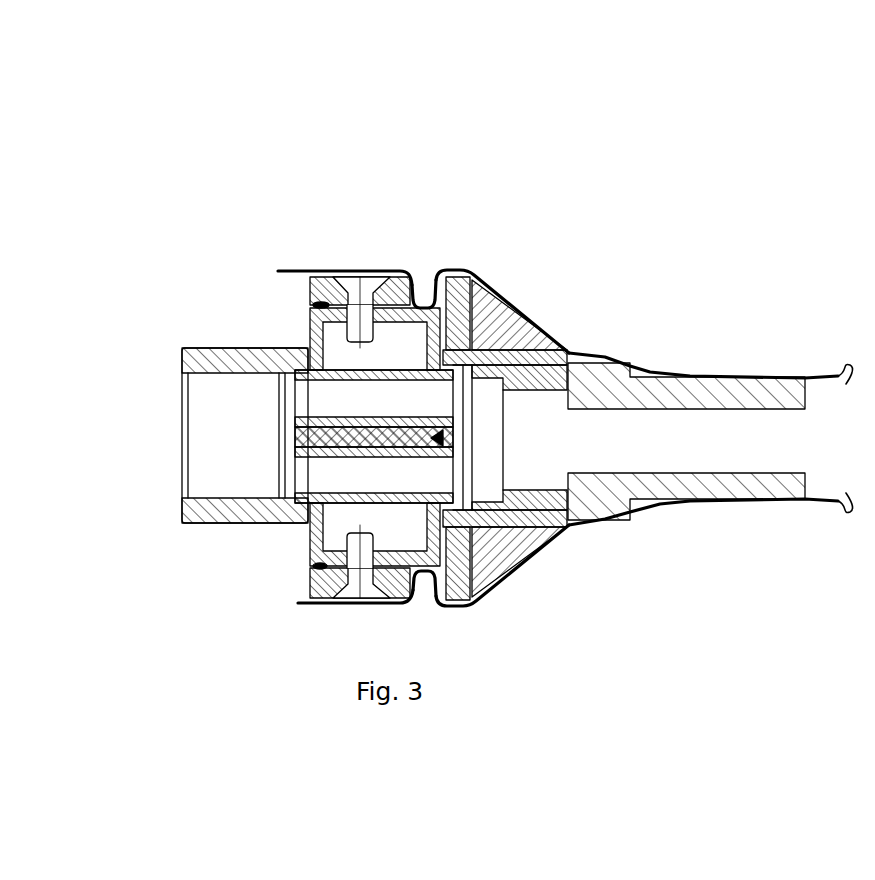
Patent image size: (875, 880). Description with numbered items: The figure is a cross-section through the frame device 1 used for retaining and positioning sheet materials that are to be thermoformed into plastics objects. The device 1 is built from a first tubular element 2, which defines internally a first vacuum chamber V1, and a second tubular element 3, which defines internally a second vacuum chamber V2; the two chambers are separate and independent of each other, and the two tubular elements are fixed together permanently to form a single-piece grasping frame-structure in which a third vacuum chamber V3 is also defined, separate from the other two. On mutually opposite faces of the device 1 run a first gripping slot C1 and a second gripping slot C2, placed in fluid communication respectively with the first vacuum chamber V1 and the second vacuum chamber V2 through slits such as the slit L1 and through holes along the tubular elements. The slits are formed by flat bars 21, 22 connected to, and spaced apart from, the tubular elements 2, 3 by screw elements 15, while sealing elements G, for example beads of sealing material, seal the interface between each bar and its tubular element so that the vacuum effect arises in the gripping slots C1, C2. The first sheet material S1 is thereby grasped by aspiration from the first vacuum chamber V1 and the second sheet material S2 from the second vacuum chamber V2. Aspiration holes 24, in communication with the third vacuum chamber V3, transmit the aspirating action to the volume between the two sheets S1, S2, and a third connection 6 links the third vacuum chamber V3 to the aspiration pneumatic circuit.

The frame device 1 is at (527, 204).
The first tubular element 2 is at (308, 322).
The second tubular element 3 is at (317, 520).
The third connection 6 is at (198, 358).
The screw element 15 is at (360, 278).
The bar 21 is at (326, 316).
The bar 22 is at (449, 326).
The aspiration holes 24 is at (679, 452).
The sealing elements G is at (318, 305).
The first vacuum chamber V1 is at (387, 360).
The second vacuum chamber V2 is at (350, 523).
The third vacuum chamber V3 is at (487, 443).
The first gripping slot C1 is at (436, 236).
The second gripping slot C2 is at (475, 600).
The slit L1 is at (416, 308).
The first sheet material S1 is at (781, 376).
The second sheet material S2 is at (783, 503).